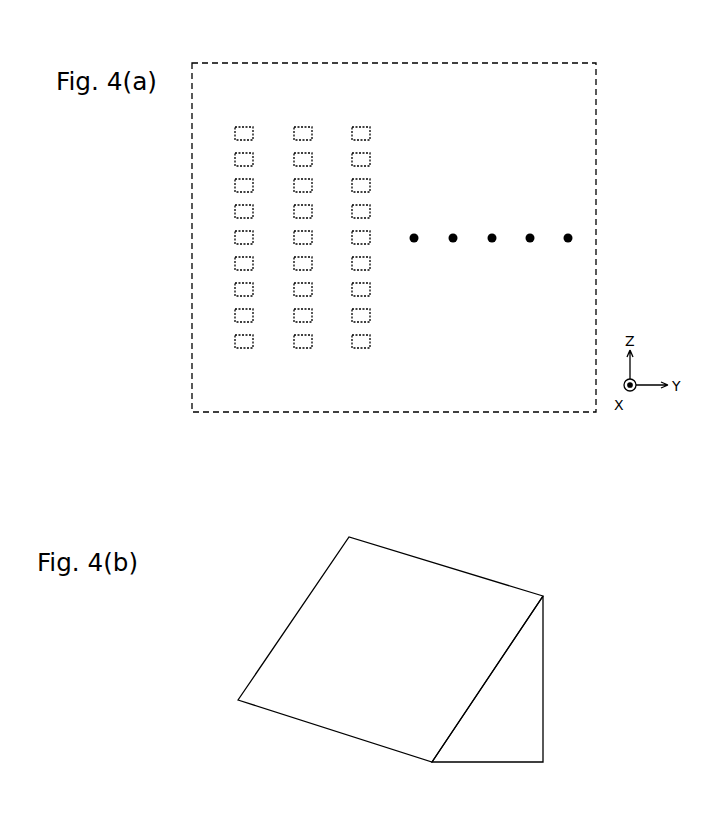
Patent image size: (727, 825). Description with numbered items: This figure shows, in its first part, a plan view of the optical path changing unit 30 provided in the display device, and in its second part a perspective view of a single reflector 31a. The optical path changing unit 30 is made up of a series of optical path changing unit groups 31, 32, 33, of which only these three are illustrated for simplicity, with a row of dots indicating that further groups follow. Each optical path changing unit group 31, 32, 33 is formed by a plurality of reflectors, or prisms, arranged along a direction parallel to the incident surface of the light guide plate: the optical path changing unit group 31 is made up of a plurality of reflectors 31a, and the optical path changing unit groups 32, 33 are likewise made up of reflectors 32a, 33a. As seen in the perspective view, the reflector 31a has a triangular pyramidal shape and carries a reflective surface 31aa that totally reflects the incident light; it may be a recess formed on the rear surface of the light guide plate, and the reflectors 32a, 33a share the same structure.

In FIG. 4A, the optical path changing unit 30 is at (427, 62).
In FIG. 4A, the optical path changing unit group 31 is at (243, 241).
In FIG. 4A, the optical path changing unit group 32 is at (302, 241).
In FIG. 4A, the optical path changing unit group 33 is at (361, 241).
In FIG. 4A, the reflector 31a is at (243, 343).
In FIG. 4B, the reflector 31a is at (390, 649).
In FIG. 4A, the reflector 32a is at (302, 343).
In FIG. 4A, the reflector 33a is at (361, 343).
In FIG. 4B, the reflective surface 31aa is at (312, 627).